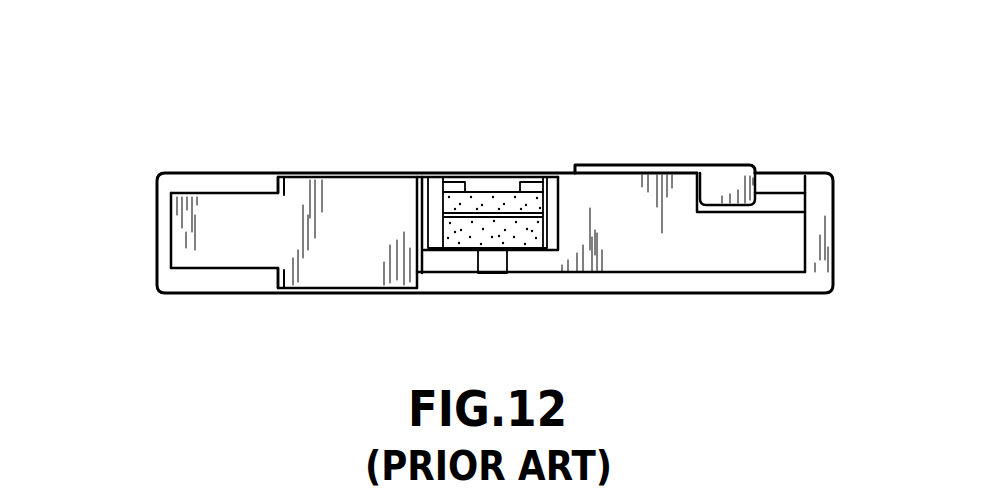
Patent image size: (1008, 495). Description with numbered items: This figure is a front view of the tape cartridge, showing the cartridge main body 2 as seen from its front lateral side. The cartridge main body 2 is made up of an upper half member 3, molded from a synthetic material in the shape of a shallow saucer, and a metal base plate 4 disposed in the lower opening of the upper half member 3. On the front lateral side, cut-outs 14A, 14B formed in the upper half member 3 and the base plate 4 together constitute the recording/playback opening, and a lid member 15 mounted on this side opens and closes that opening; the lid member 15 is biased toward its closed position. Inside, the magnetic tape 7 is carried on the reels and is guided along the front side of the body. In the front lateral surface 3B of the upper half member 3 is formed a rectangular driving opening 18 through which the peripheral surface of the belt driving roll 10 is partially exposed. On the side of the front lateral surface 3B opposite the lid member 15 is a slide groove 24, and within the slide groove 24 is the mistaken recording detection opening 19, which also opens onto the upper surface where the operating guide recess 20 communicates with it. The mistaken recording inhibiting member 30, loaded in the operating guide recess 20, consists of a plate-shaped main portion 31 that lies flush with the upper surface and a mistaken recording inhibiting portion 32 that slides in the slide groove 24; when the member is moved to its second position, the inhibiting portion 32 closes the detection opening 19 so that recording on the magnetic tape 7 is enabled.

The cartridge main body 2 is at (112, 173).
The upper half member 3 is at (160, 182).
The base plate 4 is at (160, 277).
The cut-out 14A is at (266, 172).
The cut-out 14B is at (276, 283).
The lid member 15 is at (345, 272).
The magnetic tape 7 is at (470, 233).
The belt driving roll 10 is at (483, 195).
The driving opening 18 is at (542, 187).
The mistaken recording inhibiting member 30 is at (775, 107).
The main portion 31 is at (675, 167).
The mistaken recording inhibiting portion 32 is at (738, 172).
The mistaken recording detection opening 19 is at (784, 173).
The operating guide recess 20 is at (800, 173).
The slide groove 24 is at (772, 212).
The front lateral surface 3B is at (642, 258).